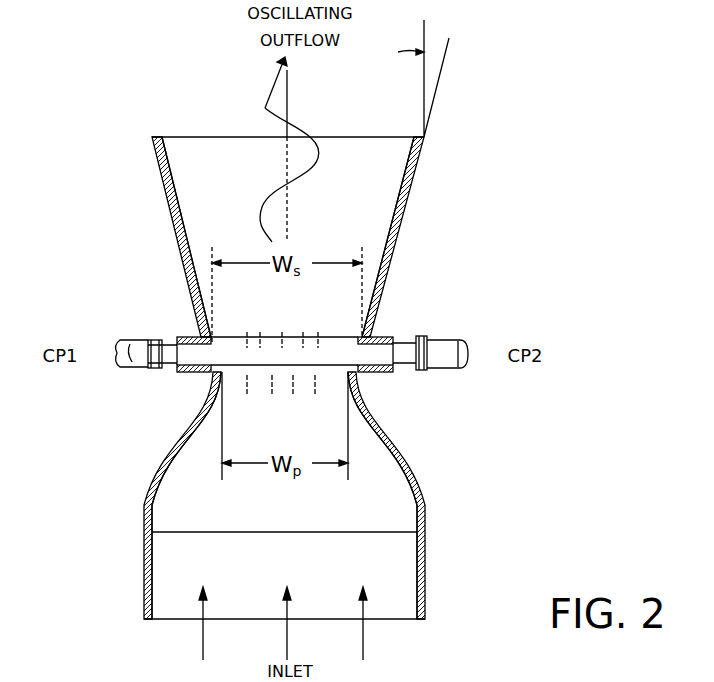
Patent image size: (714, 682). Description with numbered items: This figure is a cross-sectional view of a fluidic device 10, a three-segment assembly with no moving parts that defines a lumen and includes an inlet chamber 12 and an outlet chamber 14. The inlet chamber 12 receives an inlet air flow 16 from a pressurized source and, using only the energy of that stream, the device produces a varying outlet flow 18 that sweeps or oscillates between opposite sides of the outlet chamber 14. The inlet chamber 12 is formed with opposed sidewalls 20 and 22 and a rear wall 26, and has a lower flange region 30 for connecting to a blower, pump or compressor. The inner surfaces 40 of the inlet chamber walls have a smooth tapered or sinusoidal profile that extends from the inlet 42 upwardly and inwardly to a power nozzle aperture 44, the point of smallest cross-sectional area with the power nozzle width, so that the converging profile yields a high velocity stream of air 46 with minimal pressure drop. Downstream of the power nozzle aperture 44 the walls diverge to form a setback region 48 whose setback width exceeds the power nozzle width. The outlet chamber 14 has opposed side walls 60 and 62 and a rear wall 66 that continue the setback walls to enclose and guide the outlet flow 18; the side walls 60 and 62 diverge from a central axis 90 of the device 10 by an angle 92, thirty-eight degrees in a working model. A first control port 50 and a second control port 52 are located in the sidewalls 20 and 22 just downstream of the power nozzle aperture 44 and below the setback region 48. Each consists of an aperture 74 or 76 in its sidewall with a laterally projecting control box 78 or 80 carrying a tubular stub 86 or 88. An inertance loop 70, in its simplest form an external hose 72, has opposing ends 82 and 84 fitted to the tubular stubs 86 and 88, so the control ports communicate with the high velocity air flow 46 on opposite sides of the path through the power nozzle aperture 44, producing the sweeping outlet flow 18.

The fluidic device 10 is at (470, 165).
The inlet chamber 12 is at (428, 478).
The outlet chamber 14 is at (407, 220).
The inlet air flow 16 is at (365, 648).
The varying outlet flow 18 is at (265, 108).
The sidewall 20 is at (145, 515).
The sidewall 22 is at (425, 512).
The rear wall 26 is at (370, 518).
The lower flange region 30 is at (138, 605).
The inner surfaces 40 is at (190, 433).
The inlet 42 is at (194, 526).
The power nozzle aperture 44 is at (194, 376).
The high velocity stream of air 46 is at (293, 383).
The setback region 48 is at (212, 340).
The first control port 50 is at (170, 364).
The second control port 52 is at (366, 393).
The side wall 60 is at (175, 228).
The side wall 62 is at (418, 160).
The rear wall 66 is at (205, 152).
The inertance loop 70 is at (485, 323).
The hose 72 is at (458, 350).
The aperture 74 is at (211, 355).
The aperture 76 is at (362, 343).
The control box 78 is at (195, 337).
The control box 80 is at (385, 336).
The hose end 82 is at (130, 357).
The hose end 84 is at (450, 338).
The tubular stub 86 is at (155, 368).
The tubular stub 88 is at (398, 372).
The central axis 90 is at (287, 195).
The angle 92 is at (448, 55).